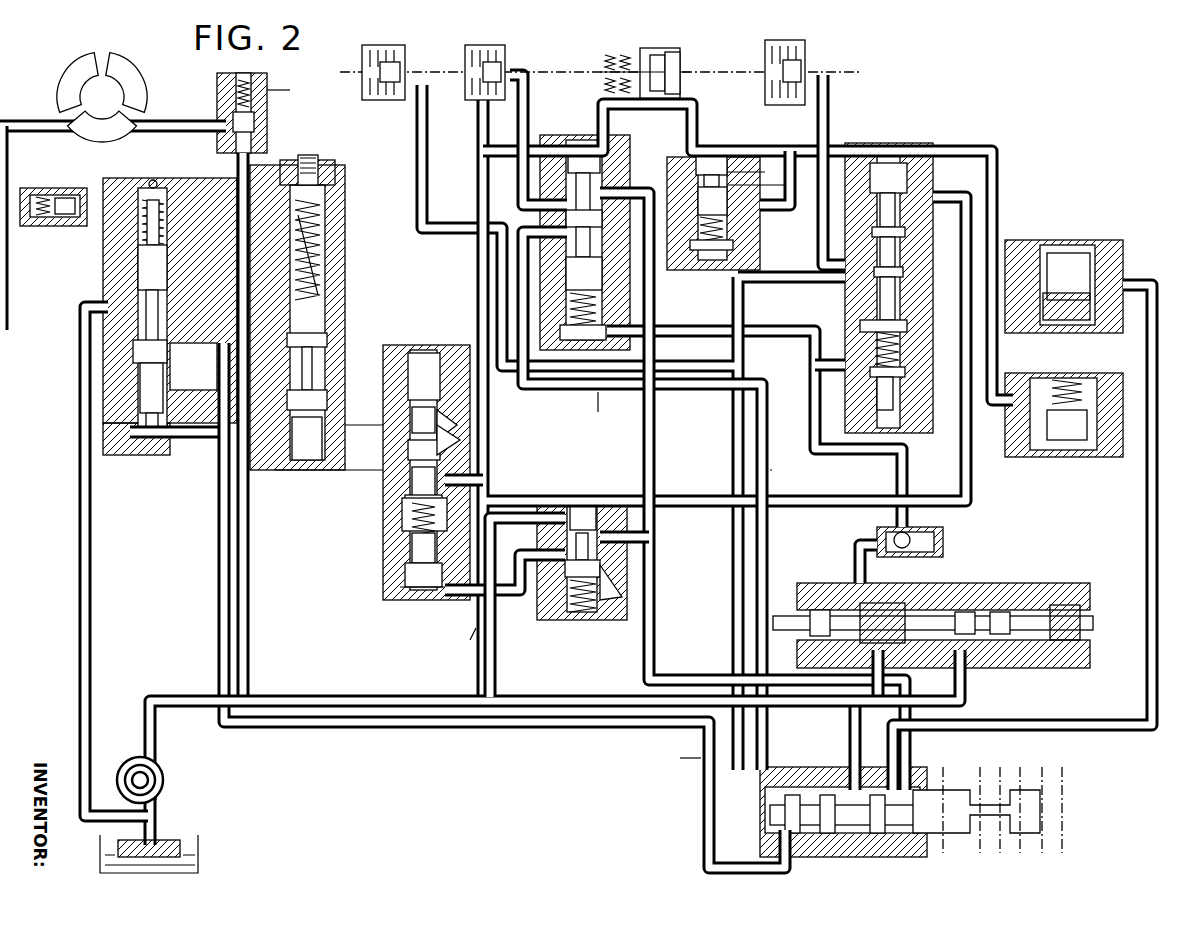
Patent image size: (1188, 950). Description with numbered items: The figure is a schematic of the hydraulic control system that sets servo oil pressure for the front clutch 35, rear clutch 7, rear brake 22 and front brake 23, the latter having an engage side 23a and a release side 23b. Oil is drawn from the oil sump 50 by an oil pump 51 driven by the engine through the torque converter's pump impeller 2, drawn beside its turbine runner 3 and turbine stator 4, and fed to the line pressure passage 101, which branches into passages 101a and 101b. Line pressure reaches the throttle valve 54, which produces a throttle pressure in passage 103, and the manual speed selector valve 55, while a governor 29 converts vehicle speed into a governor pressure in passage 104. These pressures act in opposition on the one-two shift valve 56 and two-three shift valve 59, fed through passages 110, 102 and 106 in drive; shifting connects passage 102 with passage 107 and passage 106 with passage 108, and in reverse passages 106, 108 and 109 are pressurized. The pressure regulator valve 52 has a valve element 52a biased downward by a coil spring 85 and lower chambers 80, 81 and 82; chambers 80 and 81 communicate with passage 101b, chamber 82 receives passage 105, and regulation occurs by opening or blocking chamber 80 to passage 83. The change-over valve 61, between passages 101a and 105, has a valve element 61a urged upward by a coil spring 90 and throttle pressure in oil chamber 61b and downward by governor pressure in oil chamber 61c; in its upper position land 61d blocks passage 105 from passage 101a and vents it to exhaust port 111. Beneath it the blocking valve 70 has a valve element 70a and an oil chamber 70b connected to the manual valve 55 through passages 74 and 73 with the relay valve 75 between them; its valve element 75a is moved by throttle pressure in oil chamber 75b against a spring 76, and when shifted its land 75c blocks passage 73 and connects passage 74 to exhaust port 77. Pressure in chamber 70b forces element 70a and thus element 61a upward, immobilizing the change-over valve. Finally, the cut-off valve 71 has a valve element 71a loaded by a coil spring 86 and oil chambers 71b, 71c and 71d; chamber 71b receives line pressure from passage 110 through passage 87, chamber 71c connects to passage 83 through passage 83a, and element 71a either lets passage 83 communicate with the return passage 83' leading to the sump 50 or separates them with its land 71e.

The pump impeller 2 is at (142, 68).
The turbine runner 3 is at (78, 70).
The turbine stator 4 is at (93, 133).
The rear clutch 7 is at (480, 50).
The rear brake 22 is at (800, 38).
The front brake 23 is at (645, 60).
The engage side of front brake 23a is at (675, 52).
The release side of front brake 23b is at (615, 56).
The governor 29 is at (1030, 440).
The front clutch 35 is at (395, 52).
The oil sump 50 is at (200, 862).
The oil pump 51 is at (132, 760).
The pressure regulator valve 52 is at (328, 165).
The valve element 52a is at (318, 268).
The throttle valve 54 is at (1085, 625).
The manual speed selector valve 55 is at (818, 838).
The 1-2 shift valve 56 is at (857, 270).
The 2-3 shift valve 59 is at (618, 145).
The change-over valve 61 is at (434, 472).
The valve element 61a is at (442, 412).
The oil chamber 61b is at (408, 500).
The oil chamber 61c is at (405, 352).
The valve land 61d is at (440, 480).
The blocking valve 70 is at (408, 540).
The valve element 70a is at (402, 565).
The oil chamber 70b is at (410, 600).
The cut-off valve 71 is at (161, 301).
The valve element 71a is at (160, 240).
The oil chamber 71b is at (160, 440).
The oil chamber 71c is at (138, 385).
The oil chamber 71d is at (133, 355).
The land 71e is at (160, 272).
The passage 73 is at (678, 758).
The passage 74 is at (462, 642).
The relay valve 75 is at (570, 539).
The valve element 75a is at (560, 572).
The oil chamber 75b is at (600, 500).
The land 75c is at (565, 520).
The spring 76 is at (565, 605).
The exhaust port 77 is at (622, 552).
The chamber 80 is at (316, 297).
The chamber 81 is at (322, 440).
The chamber 82 is at (292, 490).
The exhaust passage 83 is at (212, 323).
The exhaust passage 83' is at (116, 561).
The passage 83a is at (210, 392).
The coil spring 85 is at (320, 228).
The coil spring 86 is at (168, 222).
The passage 87 is at (382, 730).
The coil spring 90 is at (405, 515).
The line pressure passage 101 is at (593, 694).
The branch passage 101a is at (498, 668).
The branch passage 101b is at (250, 636).
The passage 102 is at (840, 303).
The passage 103 is at (950, 525).
The passage 104 is at (992, 347).
The passage 105 is at (370, 412).
The passage 106 is at (791, 472).
The passage 107 is at (840, 268).
The passage 108 is at (517, 140).
The passage 109 is at (1143, 539).
The passage 110 is at (597, 414).
The exhaust port 111 is at (455, 450).